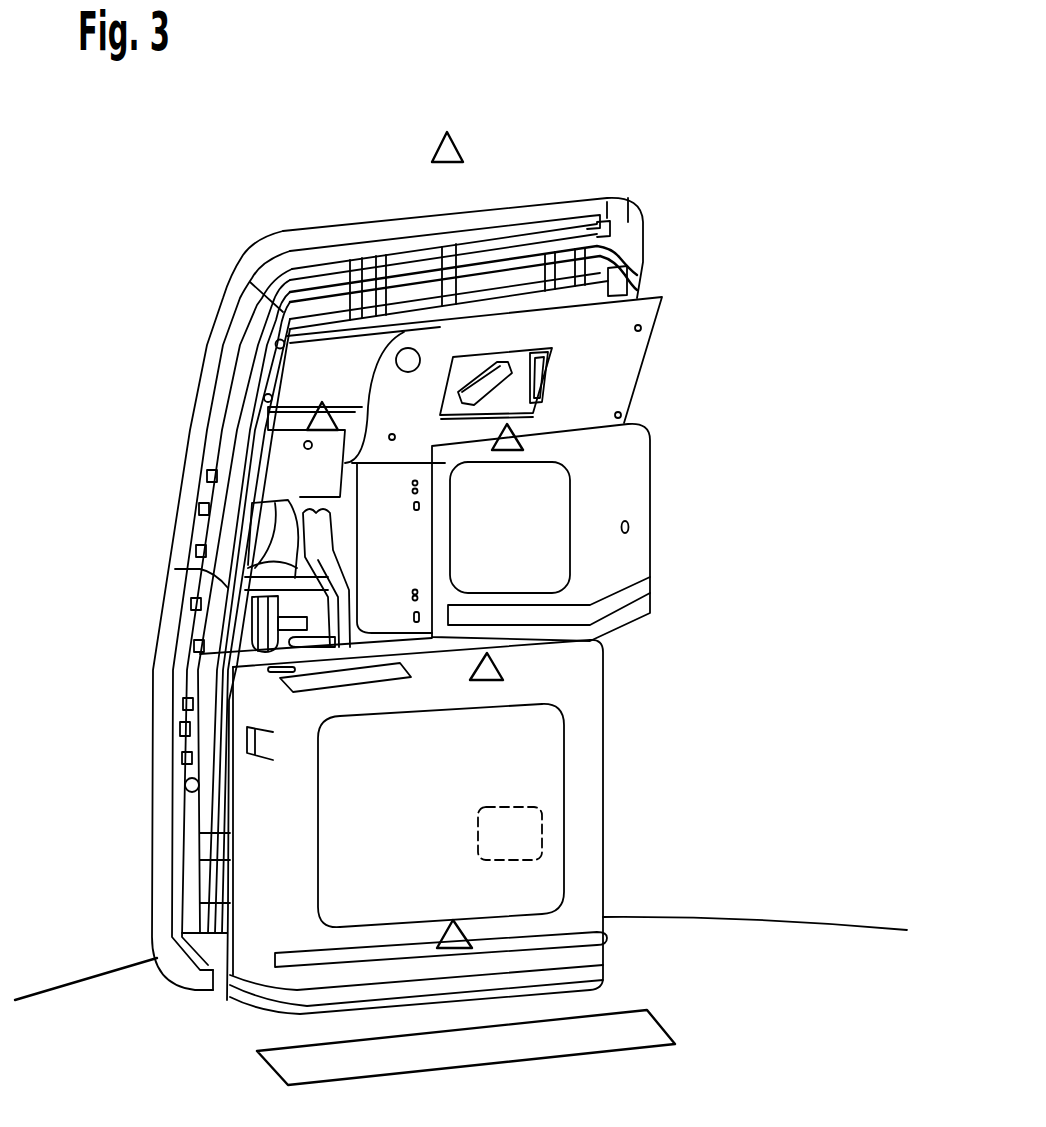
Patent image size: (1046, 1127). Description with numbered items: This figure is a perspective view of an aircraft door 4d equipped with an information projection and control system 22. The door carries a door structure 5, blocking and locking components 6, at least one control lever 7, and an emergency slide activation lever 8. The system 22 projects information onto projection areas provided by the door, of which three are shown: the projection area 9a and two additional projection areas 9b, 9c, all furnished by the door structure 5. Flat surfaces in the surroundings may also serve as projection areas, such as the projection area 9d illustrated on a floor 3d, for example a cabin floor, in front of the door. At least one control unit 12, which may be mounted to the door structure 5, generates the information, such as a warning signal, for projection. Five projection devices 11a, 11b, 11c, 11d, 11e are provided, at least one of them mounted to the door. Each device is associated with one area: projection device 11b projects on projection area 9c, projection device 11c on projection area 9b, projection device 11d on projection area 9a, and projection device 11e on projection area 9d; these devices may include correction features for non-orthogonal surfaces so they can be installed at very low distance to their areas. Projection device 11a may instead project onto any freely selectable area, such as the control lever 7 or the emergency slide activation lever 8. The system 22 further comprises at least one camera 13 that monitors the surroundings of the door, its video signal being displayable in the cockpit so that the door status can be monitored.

The floor 3d is at (122, 1042).
The aircraft door 4d is at (219, 170).
The door structure 5 is at (611, 327).
The blocking and locking components 6 is at (191, 822).
The control lever 7 is at (234, 635).
The emergency slide activation lever 8 is at (508, 399).
The projection area 9a is at (565, 769).
The projection area 9b is at (570, 548).
The projection area 9c is at (327, 680).
The projection area 9d is at (652, 1020).
The projection device 11a is at (463, 150).
The projection device 11b is at (312, 420).
The projection device 11c is at (522, 440).
The projection device 11d is at (503, 667).
The projection device 11e is at (470, 934).
The control unit 12 is at (542, 831).
The camera 13 is at (409, 348).
The information projection and control system 22 is at (718, 444).